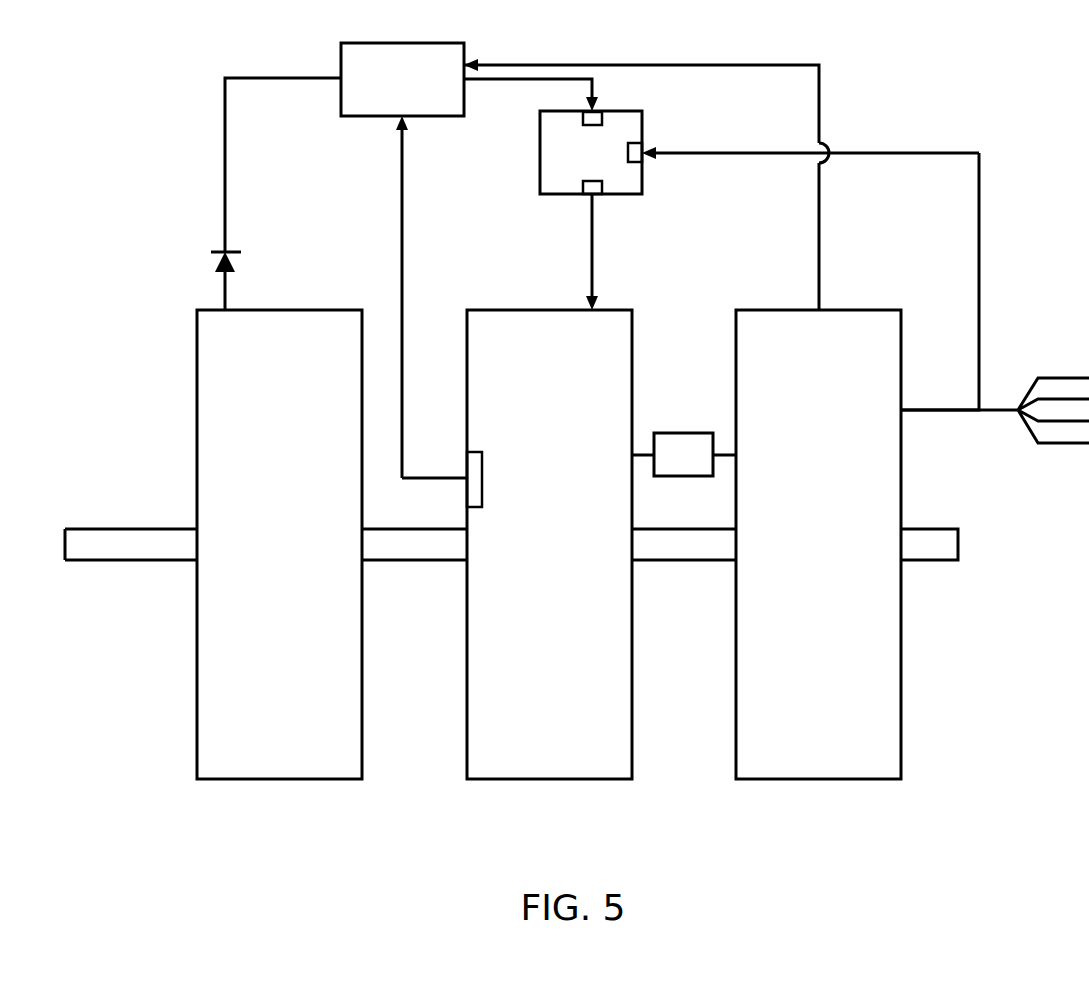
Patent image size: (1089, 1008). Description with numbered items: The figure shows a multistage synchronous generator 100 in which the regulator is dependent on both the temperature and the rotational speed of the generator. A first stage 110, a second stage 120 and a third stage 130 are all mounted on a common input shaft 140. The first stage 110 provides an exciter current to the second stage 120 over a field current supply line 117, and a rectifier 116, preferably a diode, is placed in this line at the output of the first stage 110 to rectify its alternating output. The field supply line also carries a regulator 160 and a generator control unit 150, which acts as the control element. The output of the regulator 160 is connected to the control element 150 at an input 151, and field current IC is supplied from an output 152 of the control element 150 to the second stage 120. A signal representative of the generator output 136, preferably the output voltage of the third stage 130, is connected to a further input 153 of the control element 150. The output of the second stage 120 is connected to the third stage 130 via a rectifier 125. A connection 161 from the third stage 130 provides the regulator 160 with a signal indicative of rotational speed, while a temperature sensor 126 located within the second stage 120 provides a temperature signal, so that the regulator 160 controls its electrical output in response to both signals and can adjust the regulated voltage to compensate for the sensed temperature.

The multistage synchronous generator 100 is at (160, 123).
The first stage 110 is at (278, 780).
The rectifier 116 is at (215, 260).
The field current supply line 117 is at (288, 77).
The second stage 120 is at (553, 780).
The rectifier 125 is at (676, 432).
The temperature sensor 126 is at (470, 455).
The third stage 130 is at (818, 780).
The output 136 is at (992, 412).
The input shaft 140 is at (118, 528).
The generator control unit 150 is at (643, 132).
The input 151 is at (582, 119).
The output 152 is at (582, 186).
The further input 153 is at (634, 162).
The regulator 160 is at (466, 52).
The connection 161 is at (820, 248).
The field current IC is at (595, 275).